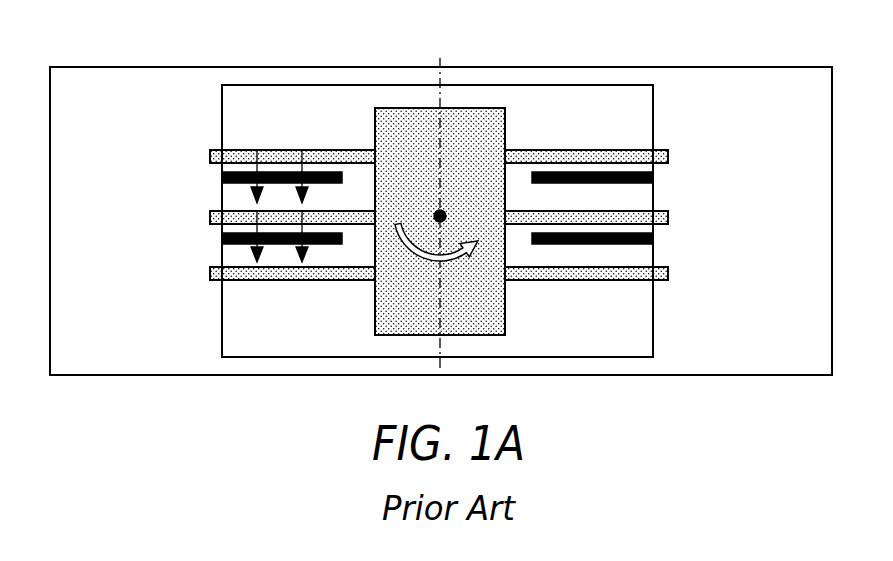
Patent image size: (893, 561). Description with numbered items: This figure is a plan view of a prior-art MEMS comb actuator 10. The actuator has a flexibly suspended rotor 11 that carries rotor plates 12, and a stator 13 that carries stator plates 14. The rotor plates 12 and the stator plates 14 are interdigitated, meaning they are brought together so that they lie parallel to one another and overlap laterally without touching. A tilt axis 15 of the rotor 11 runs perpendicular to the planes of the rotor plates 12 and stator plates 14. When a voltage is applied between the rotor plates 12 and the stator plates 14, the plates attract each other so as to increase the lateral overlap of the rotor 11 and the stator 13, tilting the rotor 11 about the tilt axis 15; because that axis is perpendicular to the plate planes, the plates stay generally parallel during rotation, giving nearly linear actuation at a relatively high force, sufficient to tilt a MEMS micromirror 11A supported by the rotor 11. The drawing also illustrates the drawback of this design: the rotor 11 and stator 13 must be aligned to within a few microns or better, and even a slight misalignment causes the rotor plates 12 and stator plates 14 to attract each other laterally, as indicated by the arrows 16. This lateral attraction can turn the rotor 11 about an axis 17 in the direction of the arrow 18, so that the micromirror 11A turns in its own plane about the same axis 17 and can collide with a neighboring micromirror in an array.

The MEMS comb actuator 10 is at (441, 206).
The rotor 11 is at (487, 319).
The MEMS micromirror 11A is at (810, 358).
The rotor plates 12 is at (210, 273).
The stator 13 is at (631, 340).
The stator plates 14 is at (222, 176).
The tilt axis 15 is at (437, 77).
The arrows 16 is at (257, 262).
The axis 17 is at (447, 214).
The arrow 18 is at (424, 257).